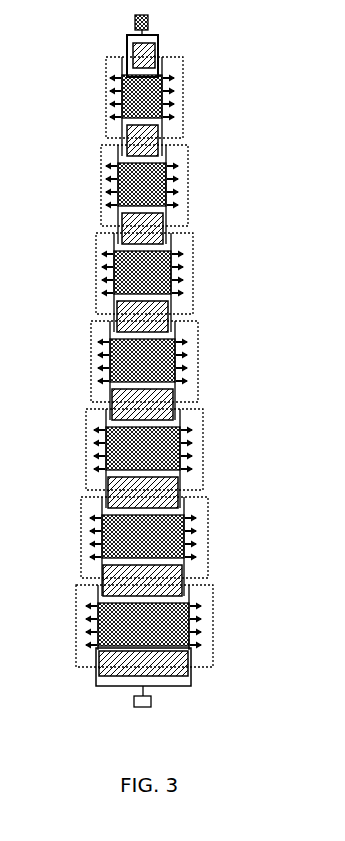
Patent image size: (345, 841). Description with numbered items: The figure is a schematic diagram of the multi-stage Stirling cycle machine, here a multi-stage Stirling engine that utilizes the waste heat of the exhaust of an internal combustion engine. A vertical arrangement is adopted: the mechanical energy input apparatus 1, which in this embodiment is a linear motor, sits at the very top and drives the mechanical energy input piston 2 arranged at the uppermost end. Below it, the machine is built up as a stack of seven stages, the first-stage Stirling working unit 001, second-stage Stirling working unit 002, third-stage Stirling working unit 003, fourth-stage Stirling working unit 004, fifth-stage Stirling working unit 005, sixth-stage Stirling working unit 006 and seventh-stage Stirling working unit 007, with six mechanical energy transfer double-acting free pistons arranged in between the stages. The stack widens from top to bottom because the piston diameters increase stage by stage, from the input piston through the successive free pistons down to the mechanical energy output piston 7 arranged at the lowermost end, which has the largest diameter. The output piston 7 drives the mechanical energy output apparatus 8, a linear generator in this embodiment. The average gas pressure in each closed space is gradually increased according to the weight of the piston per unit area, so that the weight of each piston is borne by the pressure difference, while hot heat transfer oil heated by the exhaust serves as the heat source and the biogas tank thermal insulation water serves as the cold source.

The mechanical energy input apparatus 1 is at (134, 23).
The mechanical energy input piston 2 is at (133, 60).
The first-stage Stirling working unit 001 is at (183, 97).
The second-stage Stirling working unit 002 is at (188, 185).
The third-stage Stirling working unit 003 is at (193, 273).
The fourth-stage Stirling working unit 004 is at (198, 361).
The fifth-stage Stirling working unit 005 is at (203, 449).
The sixth-stage Stirling working unit 006 is at (208, 537).
The seventh-stage Stirling working unit 007 is at (213, 624).
The mechanical energy output piston 7 is at (108, 660).
The mechanical energy output apparatus 8 is at (134, 697).